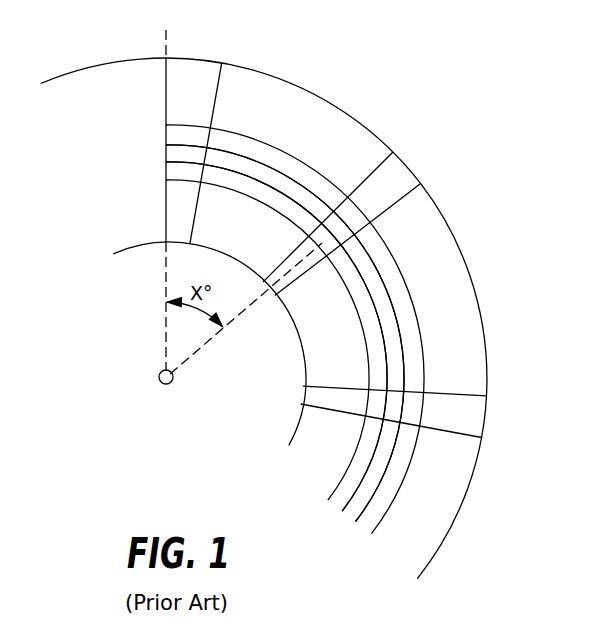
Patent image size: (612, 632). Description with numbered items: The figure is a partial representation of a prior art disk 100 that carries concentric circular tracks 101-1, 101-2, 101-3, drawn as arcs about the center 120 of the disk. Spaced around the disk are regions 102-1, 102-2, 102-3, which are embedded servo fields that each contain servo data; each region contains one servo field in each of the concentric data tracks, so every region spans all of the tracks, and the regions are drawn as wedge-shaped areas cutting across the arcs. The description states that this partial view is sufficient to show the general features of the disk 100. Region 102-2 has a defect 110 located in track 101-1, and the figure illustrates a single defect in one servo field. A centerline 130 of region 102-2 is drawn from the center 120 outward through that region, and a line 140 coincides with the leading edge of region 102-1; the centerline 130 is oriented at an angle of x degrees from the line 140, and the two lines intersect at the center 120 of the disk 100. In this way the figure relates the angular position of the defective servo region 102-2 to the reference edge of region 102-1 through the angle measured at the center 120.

The disk 100 is at (113, 422).
The concentric circular track 101-1 is at (172, 172).
The concentric circular track 101-2 is at (172, 152).
The concentric circular track 101-3 is at (172, 133).
The region 102-1 is at (197, 63).
The region 102-2 is at (407, 173).
The region 102-3 is at (478, 413).
The defect 110 is at (336, 238).
The center 120 is at (170, 384).
The centerline 130 is at (238, 315).
The line 140 is at (165, 267).